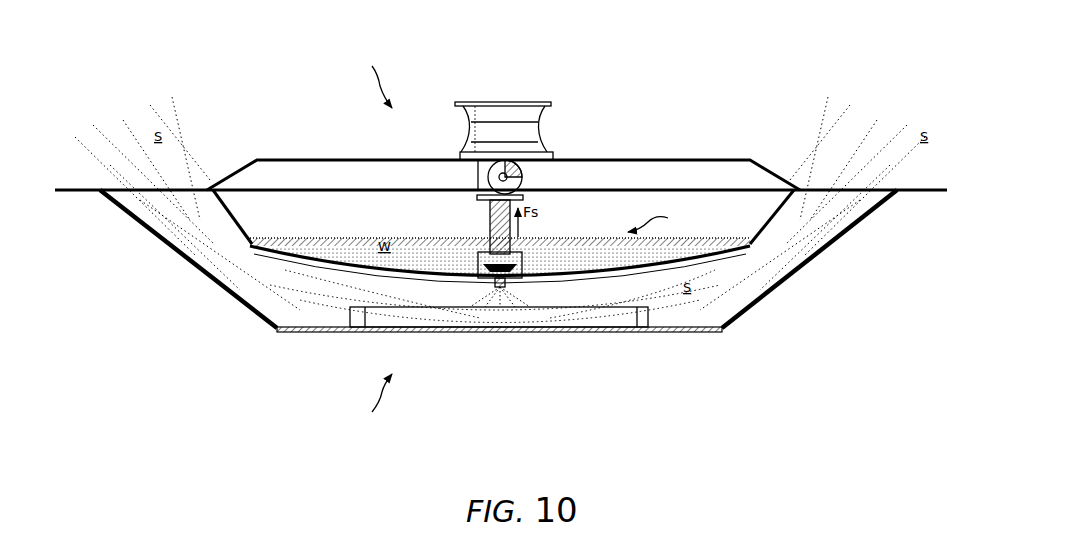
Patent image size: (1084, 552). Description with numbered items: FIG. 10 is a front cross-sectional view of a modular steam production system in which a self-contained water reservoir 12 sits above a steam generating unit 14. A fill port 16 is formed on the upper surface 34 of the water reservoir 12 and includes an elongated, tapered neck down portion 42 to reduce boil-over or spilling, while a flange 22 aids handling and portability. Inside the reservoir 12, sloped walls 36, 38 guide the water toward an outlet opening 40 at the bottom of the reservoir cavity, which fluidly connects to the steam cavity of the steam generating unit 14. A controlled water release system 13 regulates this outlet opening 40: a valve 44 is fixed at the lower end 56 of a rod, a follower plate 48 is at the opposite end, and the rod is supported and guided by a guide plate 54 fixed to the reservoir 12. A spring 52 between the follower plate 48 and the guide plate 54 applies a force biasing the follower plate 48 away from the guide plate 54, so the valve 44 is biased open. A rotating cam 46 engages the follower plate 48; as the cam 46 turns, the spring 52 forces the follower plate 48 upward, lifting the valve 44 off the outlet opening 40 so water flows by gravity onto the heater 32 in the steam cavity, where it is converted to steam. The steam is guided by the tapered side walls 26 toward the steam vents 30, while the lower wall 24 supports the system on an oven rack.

The self-contained water reservoir 12 is at (376, 77).
The controlled water release system 13 is at (663, 217).
The steam generating unit 14 is at (376, 408).
The fill port 16 is at (476, 102).
The flange 22 is at (78, 188).
The lower wall 24 is at (328, 332).
The side walls 26 is at (182, 268).
The steam vents 30 is at (140, 190).
The heater 32 is at (493, 332).
The upper surface 34 is at (326, 160).
The sloped wall 36 is at (298, 251).
The sloped wall 38 is at (242, 214).
The outlet opening 40 is at (500, 261).
The neck down portion 42 is at (545, 130).
The valve 44 is at (478, 268).
The rotating cam 46 is at (486, 180).
The follower plate 48 is at (478, 198).
The spring 52 is at (521, 239).
The guide plate 54 is at (478, 262).
The lower end 56 is at (490, 286).